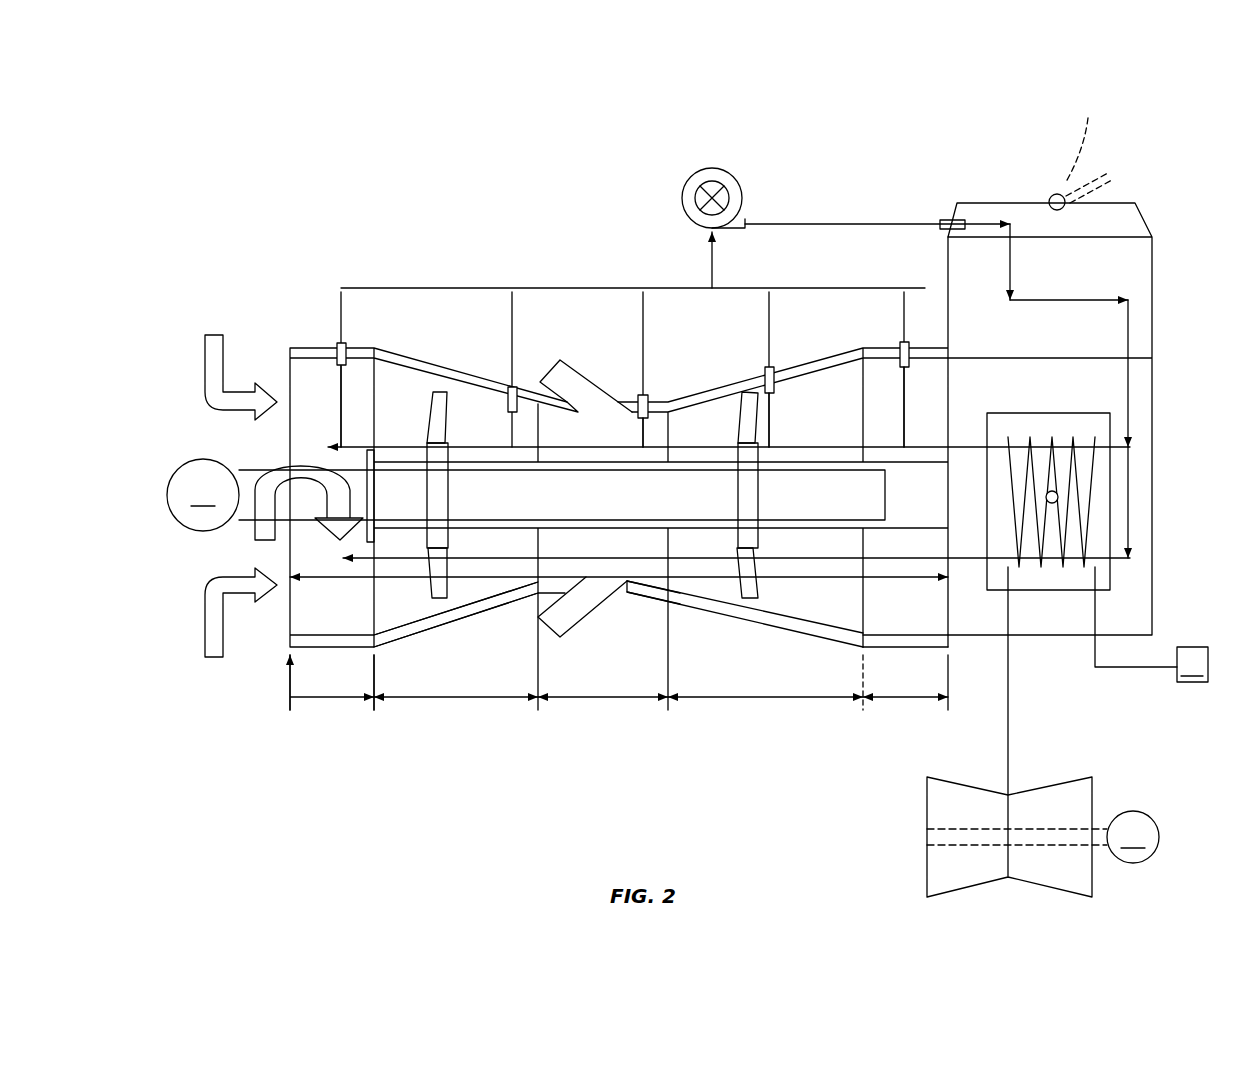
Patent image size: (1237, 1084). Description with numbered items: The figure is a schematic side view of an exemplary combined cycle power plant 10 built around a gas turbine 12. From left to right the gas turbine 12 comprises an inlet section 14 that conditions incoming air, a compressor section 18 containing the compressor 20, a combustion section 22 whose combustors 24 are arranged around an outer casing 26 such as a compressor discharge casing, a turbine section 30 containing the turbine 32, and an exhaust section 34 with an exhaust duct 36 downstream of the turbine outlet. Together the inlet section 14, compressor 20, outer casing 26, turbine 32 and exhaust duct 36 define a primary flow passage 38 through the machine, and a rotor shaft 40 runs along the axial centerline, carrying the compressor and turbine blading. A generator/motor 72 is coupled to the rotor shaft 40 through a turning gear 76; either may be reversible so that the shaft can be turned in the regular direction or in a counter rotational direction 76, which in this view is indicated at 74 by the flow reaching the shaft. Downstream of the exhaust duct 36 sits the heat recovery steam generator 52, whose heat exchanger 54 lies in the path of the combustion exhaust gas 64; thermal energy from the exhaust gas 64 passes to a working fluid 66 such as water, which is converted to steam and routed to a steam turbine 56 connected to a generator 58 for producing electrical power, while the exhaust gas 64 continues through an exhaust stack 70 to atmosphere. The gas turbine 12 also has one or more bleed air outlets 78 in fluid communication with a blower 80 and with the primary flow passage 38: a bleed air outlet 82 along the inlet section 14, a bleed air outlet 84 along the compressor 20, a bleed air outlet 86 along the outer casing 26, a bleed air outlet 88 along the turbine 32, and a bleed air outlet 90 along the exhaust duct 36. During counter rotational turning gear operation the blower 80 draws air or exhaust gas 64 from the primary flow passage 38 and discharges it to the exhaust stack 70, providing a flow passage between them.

The combined cycle power plant 10 is at (597, 182).
The gas turbine 12 is at (490, 758).
The inlet section 14 is at (328, 700).
The compressor section 18 is at (447, 700).
The compressor 20 is at (452, 624).
The combustion section 22 is at (600, 700).
The combustors 24 is at (573, 630).
The outer casing 26 is at (645, 590).
The turbine section 30 is at (747, 700).
The turbine 32 is at (768, 627).
The exhaust section 34 is at (903, 700).
The exhaust duct 36 is at (912, 651).
The primary flow passage 38 is at (342, 578).
The rotor shaft 40 is at (597, 472).
The heat recovery steam generator 52 is at (1113, 487).
The heat exchanger 54 is at (1058, 433).
The steam turbine 56 is at (1005, 882).
The generator 58 is at (1133, 837).
The combustion exhaust gas 64 is at (870, 222).
The working fluid 66 is at (1094, 655).
The exhaust stack 70 is at (1155, 300).
The generator/motor 72 is at (203, 495).
The drive coupling 74 is at (363, 462).
The turning gear 76 is at (262, 543).
The bleed air outlets 78 is at (333, 347).
The blower 80 is at (740, 178).
The bleed air outlet 82 is at (346, 345).
The bleed air outlet 84 is at (540, 383).
The bleed air outlet 86 is at (649, 395).
The bleed air outlet 88 is at (773, 368).
The bleed air outlet 90 is at (910, 352).